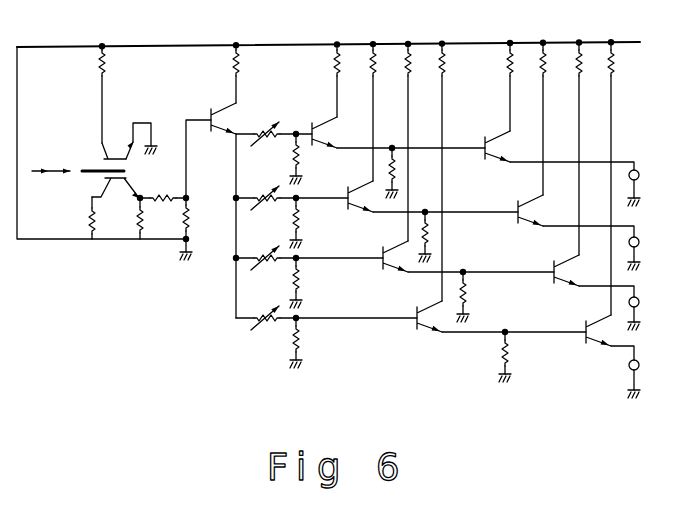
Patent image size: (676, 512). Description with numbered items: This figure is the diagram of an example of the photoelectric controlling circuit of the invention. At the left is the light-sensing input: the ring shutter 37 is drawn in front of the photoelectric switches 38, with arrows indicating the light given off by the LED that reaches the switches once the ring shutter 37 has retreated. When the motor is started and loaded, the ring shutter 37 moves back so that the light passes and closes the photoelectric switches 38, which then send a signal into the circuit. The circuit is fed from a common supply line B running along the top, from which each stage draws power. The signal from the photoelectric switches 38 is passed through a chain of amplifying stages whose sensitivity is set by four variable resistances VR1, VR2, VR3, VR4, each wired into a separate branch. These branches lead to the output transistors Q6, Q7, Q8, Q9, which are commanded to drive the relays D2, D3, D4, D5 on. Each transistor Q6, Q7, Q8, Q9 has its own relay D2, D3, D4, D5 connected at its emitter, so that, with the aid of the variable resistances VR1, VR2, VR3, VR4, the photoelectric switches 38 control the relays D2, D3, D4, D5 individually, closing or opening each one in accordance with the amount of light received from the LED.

The ring shutter 37 is at (92, 168).
The photoelectric switches 38 is at (113, 137).
The element B is at (328, 28).
The variable resistance VR1 is at (269, 153).
The variable resistance VR2 is at (269, 217).
The variable resistance VR3 is at (269, 277).
The variable resistance VR4 is at (268, 337).
The transistor Q6 is at (488, 101).
The transistor Q7 is at (520, 133).
The transistor Q8 is at (557, 162).
The transistor Q9 is at (592, 192).
The relay D2 is at (591, 184).
The relay D3 is at (608, 248).
The relay D4 is at (626, 308).
The relay D5 is at (642, 372).